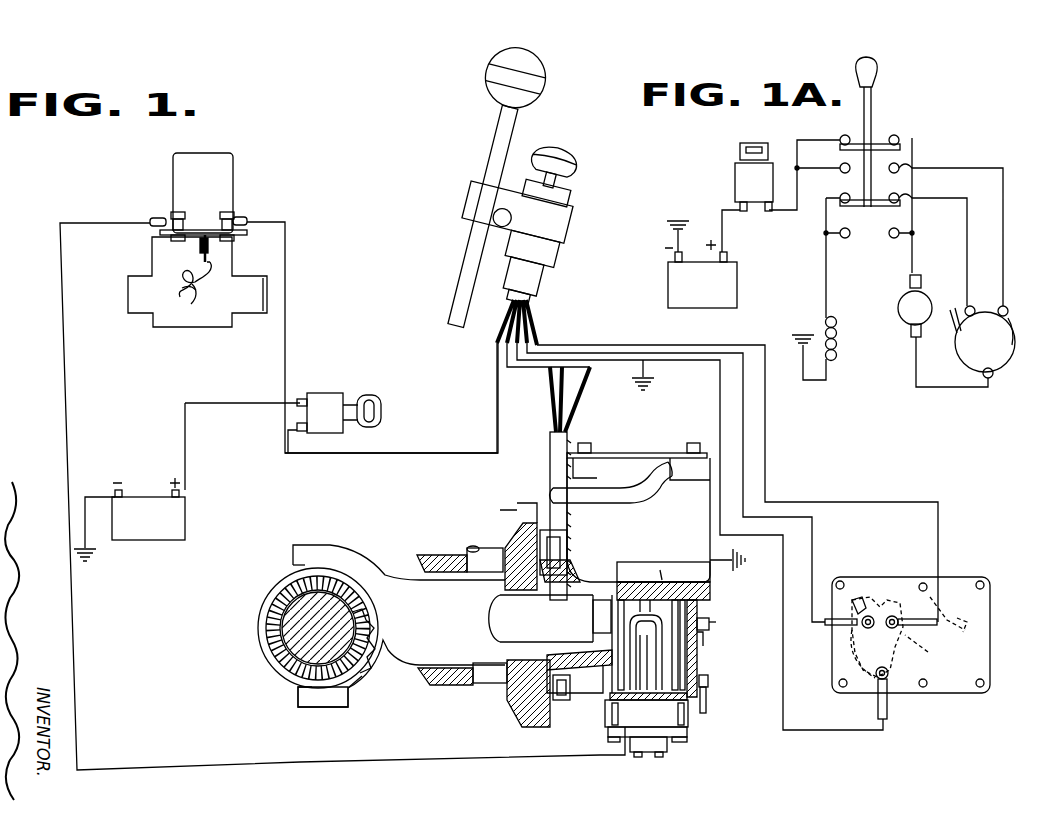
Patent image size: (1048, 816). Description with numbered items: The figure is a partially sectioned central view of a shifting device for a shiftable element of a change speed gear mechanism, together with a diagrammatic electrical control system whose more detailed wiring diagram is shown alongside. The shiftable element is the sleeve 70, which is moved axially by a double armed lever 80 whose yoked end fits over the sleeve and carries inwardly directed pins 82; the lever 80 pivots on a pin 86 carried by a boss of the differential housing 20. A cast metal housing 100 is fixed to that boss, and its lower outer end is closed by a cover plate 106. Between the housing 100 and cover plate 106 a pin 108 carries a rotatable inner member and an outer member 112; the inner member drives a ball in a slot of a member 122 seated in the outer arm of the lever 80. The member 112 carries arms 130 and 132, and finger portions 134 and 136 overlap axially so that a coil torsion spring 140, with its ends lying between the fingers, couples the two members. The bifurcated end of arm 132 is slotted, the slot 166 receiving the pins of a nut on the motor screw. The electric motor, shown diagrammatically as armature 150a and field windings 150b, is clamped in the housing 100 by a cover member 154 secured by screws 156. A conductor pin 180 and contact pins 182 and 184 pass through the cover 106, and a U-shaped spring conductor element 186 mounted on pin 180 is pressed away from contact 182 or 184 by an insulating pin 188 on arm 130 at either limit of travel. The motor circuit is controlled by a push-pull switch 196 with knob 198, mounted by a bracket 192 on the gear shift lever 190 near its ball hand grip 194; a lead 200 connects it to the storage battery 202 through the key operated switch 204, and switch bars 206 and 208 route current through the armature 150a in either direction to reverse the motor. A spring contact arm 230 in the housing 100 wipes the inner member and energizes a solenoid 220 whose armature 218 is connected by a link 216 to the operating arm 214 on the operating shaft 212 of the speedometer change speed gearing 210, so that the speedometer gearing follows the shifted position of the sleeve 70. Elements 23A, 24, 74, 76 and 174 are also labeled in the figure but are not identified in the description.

In FIG. 1, the differential housing 20 is at (540, 727).
In FIG. 1, the wiring harness 23A is at (63, 408).
In FIG. 1, the pinion gear 24 is at (290, 622).
In FIG. 1, the sleeve 70 is at (285, 645).
In FIG. 1, the gear teeth 74 is at (378, 653).
In FIG. 1, the lug 76 is at (348, 690).
In FIG. 1, the double armed lever 80 is at (445, 621).
In FIG. 1, the pin 82 is at (313, 707).
In FIG. 1, the pin 86 is at (470, 548).
In FIG. 1, the cast metal housing 100 is at (596, 569).
In FIG. 1, the cover plate 106 is at (703, 598).
In FIG. 1, the pin 108 is at (850, 651).
In FIG. 1, the member 112 is at (703, 652).
In FIG. 1, the member 122 is at (580, 620).
In FIG. 1, the arm 130 is at (877, 600).
In FIG. 1, the arm 132 is at (928, 652).
In FIG. 1, the finger portion 134 is at (663, 572).
In FIG. 1, the finger portion 136 is at (679, 573).
In FIG. 1, the coil torsion spring 140 is at (670, 740).
In FIG. 1A, the armature 150a is at (900, 306).
In FIG. 1A, the field windings 150b is at (838, 342).
In FIG. 1, the cover member 154 is at (605, 455).
In FIG. 1, the screws 156 is at (582, 444).
In FIG. 1, the slot 166 is at (645, 753).
In FIG. 1, the brush lead 174 is at (967, 625).
In FIG. 1, the conductor pin 180 is at (710, 685).
In FIG. 1A, the conductor pin 180 is at (983, 380).
In FIG. 1, the contact pin 182 is at (860, 626).
In FIG. 1A, the contact pin 182 is at (972, 306).
In FIG. 1, the contact pin 184 is at (712, 623).
In FIG. 1A, the contact pin 184 is at (1000, 313).
In FIG. 1, the spring conductor element 186 is at (700, 638).
In FIG. 1A, the spring conductor element 186 is at (992, 376).
In FIG. 1, the pin 188 is at (700, 613).
In FIG. 1, the gear shift lever 190 is at (455, 258).
In FIG. 1, the bracket 192 is at (468, 214).
In FIG. 1, the ball hand grip 194 is at (482, 96).
In FIG. 1, the switch 196 is at (558, 260).
In FIG. 1A, the switch 196 is at (919, 128).
In FIG. 1, the operating knob 198 is at (570, 143).
In FIG. 1A, the operating knob 198 is at (879, 80).
In FIG. 1, the lead 200 is at (395, 453).
In FIG. 1A, the lead 200 is at (770, 212).
In FIG. 1, the storage battery 202 is at (148, 509).
In FIG. 1A, the storage battery 202 is at (701, 264).
In FIG. 1, the key operated switch 204 is at (322, 393).
In FIG. 1A, the key operated switch 204 is at (735, 182).
In FIG. 1A, the switch bar 206 is at (798, 144).
In FIG. 1A, the switch bar 208 is at (872, 207).
In FIG. 1, the speedometer change speed gearing 210 is at (187, 327).
In FIG. 1, the operating shaft 212 is at (190, 291).
In FIG. 1, the operating arm 214 is at (210, 279).
In FIG. 1, the link 216 is at (200, 258).
In FIG. 1, the armature 218 is at (205, 235).
In FIG. 1, the solenoid 220 is at (234, 165).
In FIG. 1, the spring contact arm 230 is at (610, 683).